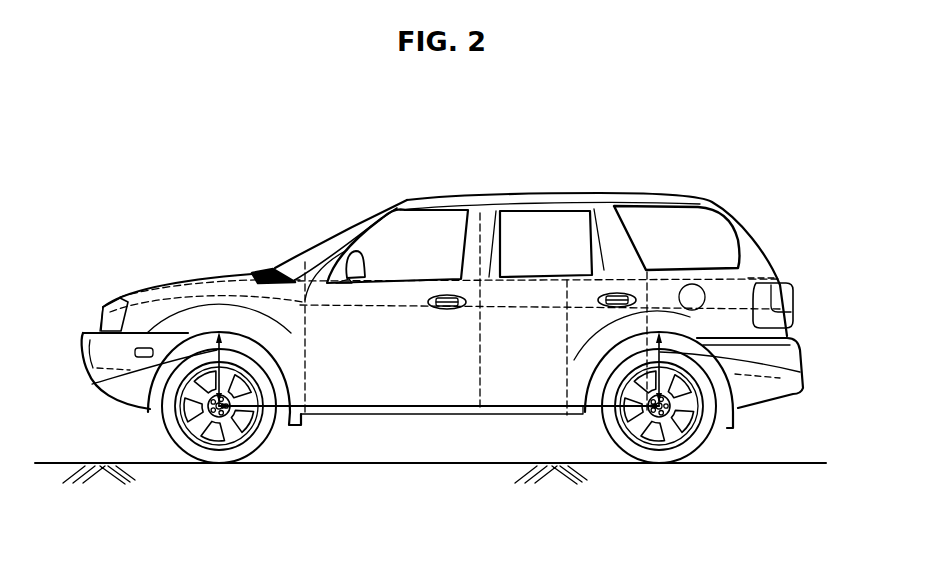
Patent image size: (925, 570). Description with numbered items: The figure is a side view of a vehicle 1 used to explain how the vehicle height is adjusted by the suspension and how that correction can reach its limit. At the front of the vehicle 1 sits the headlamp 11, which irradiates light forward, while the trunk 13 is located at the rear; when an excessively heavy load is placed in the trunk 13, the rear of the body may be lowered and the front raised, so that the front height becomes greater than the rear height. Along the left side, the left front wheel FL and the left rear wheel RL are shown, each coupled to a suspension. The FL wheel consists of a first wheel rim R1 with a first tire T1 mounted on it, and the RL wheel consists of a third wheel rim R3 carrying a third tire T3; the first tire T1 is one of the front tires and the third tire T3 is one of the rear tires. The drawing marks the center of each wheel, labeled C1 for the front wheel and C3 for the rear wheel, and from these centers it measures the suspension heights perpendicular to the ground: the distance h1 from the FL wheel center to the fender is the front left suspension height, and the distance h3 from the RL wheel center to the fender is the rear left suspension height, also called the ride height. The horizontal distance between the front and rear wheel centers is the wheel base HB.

The vehicle 1 is at (392, 170).
The headlamp 11 is at (117, 307).
The trunk 13 is at (756, 255).
The distance from center of FL wheel to fender h1 is at (92, 384).
The distance from center of RL wheel to fender h3 is at (800, 372).
The front wheel center C1 is at (215, 409).
The rear wheel center C3 is at (665, 409).
The first wheel rim R1 is at (238, 436).
The third wheel rim R3 is at (678, 436).
The first tire T1 is at (227, 457).
The third tire T3 is at (667, 457).
The left front wheel FL is at (171, 472).
The left rear wheel RL is at (610, 472).
The wheel base HB is at (440, 408).